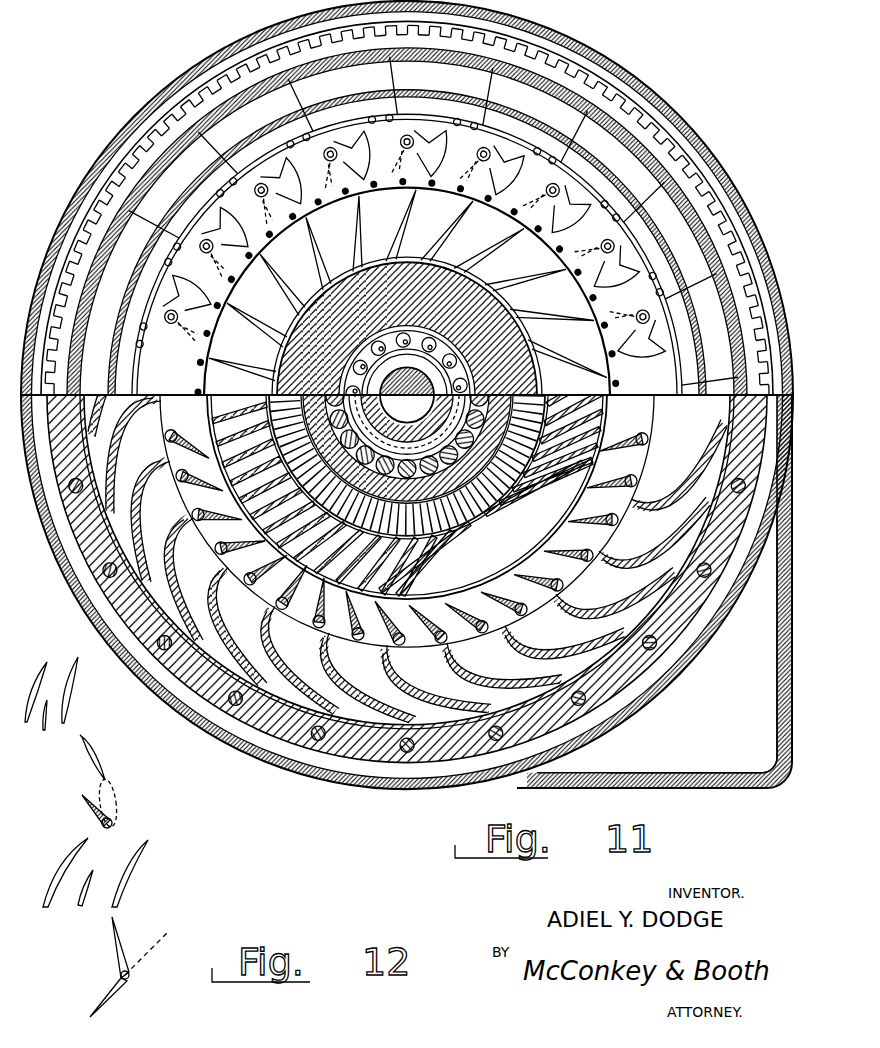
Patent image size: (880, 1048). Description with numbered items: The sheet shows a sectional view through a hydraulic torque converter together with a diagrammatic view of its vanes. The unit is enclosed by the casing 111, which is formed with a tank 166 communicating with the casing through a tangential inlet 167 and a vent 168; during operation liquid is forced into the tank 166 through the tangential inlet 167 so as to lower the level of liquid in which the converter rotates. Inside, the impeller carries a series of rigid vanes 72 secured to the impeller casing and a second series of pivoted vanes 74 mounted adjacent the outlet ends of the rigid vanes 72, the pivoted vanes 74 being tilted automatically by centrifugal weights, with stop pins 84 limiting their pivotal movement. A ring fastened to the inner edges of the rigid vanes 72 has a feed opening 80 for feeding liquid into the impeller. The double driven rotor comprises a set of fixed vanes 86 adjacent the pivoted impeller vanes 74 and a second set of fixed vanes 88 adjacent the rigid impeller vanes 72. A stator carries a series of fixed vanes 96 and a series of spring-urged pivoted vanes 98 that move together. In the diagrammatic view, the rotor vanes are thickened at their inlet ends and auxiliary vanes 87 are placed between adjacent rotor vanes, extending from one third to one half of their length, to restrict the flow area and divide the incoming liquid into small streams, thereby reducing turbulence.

In FIG. 11, the casing 111 is at (407, 395).
In FIG. 11, the pivoted impeller vanes 74 is at (433, 221).
In FIG. 12, the pivoted impeller vanes 74 is at (117, 953).
In FIG. 11, the stop pins 84 is at (399, 228).
In FIG. 11, the feed opening 80 is at (411, 248).
In FIG. 11, the rigid impeller vanes 72 is at (407, 395).
In FIG. 12, the rigid impeller vanes 72 is at (100, 1003).
In FIG. 11, the pivoted stator vanes 98 is at (406, 526).
In FIG. 12, the pivoted stator vanes 98 is at (100, 815).
In FIG. 11, the fixed stator vanes 96 is at (408, 484).
In FIG. 12, the fixed stator vanes 96 is at (100, 760).
In FIG. 11, the fixed rotor vanes 86 is at (407, 528).
In FIG. 12, the fixed rotor vanes 86 is at (130, 873).
In FIG. 11, the vent 168 is at (659, 591).
In FIG. 11, the tank 166 is at (692, 645).
In FIG. 11, the tangential inlet 167 is at (642, 772).
In FIG. 12, the second set of rotor vanes 88 is at (72, 693).
In FIG. 12, the auxiliary vanes 87 is at (45, 722).